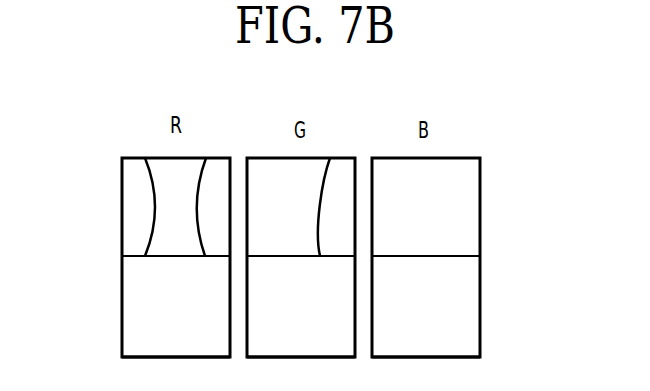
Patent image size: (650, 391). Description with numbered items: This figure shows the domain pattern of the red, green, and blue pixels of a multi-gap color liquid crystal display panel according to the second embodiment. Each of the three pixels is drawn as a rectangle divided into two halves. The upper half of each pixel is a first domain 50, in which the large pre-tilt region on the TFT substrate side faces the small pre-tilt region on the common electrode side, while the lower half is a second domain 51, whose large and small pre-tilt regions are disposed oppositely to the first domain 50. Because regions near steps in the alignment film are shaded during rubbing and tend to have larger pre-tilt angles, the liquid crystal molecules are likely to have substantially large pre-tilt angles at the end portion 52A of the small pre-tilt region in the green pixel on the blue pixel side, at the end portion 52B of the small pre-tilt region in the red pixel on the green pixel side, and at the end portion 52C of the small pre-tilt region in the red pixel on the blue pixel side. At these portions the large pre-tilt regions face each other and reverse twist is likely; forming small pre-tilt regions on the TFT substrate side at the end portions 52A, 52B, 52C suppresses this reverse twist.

The first domain 50 is at (105, 158).
The second domain 51 is at (105, 258).
The end portion of the small pre-tilt region in the green pixel 52A is at (337, 182).
The end portion of the small pre-tilt region in the red pixel on the green pixel sid 52B is at (215, 182).
The end portion of the small pre-tilt region in the red pixel on the blue pixel side 52C is at (138, 175).